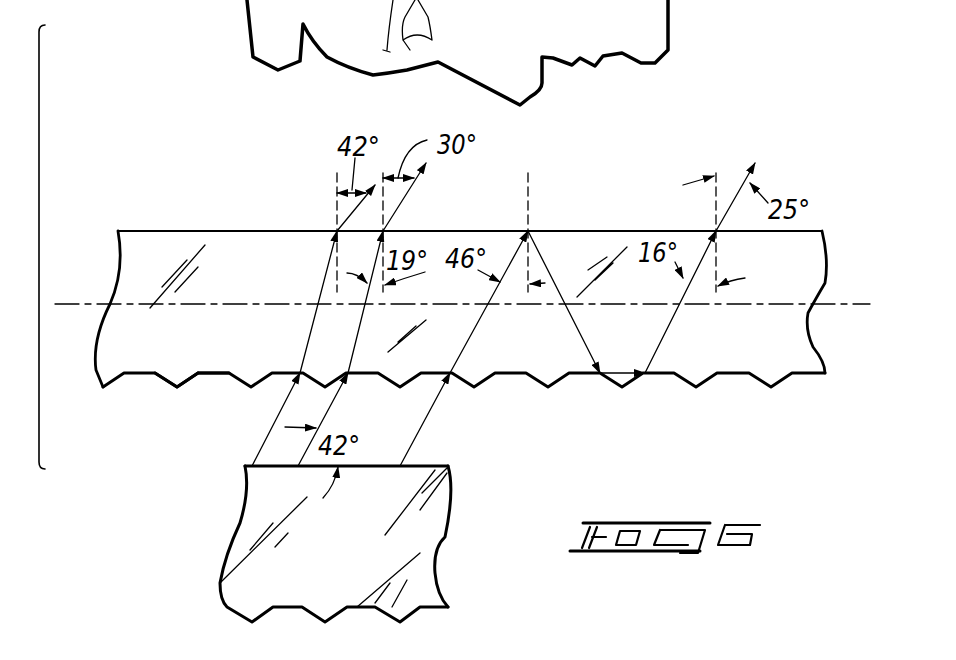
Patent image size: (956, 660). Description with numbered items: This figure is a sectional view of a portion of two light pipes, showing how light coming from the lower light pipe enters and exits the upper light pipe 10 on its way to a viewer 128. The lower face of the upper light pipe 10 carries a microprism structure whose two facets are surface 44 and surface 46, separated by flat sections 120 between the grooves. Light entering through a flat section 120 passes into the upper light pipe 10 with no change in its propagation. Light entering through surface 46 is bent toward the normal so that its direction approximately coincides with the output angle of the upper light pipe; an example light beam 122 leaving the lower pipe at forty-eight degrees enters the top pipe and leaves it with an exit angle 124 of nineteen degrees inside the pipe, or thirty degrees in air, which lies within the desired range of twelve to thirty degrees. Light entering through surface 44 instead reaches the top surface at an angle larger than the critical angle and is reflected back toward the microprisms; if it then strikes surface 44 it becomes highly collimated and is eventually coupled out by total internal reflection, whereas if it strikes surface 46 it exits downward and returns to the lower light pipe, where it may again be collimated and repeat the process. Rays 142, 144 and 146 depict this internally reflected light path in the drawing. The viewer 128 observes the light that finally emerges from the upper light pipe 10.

The upper light pipe 10 is at (850, 242).
The microprism surface 44 is at (162, 381).
The microprism surface 46 is at (190, 381).
The flat section 120 is at (212, 373).
The light beam 122 is at (331, 407).
The exit angle 124 is at (400, 205).
The viewer 128 is at (245, 30).
The light ray 142 is at (575, 332).
The reflected light ray 144 is at (618, 372).
The emitted light ray 146 is at (667, 335).